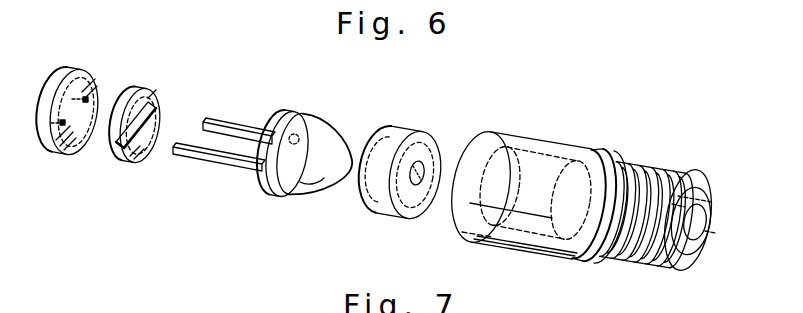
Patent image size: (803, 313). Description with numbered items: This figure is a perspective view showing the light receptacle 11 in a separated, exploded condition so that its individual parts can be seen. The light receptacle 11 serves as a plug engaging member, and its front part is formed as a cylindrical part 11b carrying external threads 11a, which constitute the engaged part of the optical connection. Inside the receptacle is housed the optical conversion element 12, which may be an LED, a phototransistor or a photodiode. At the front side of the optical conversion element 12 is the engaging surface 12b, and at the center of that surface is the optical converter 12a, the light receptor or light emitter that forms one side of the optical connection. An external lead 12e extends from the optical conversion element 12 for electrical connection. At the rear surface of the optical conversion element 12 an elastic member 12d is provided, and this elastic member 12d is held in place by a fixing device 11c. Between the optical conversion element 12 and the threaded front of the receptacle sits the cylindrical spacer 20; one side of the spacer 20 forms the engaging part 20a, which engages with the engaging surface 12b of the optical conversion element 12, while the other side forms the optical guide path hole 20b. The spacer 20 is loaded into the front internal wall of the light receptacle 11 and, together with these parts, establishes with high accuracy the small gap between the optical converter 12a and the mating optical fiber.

The light receptacle 11 is at (581, 202).
The external threads 11a is at (655, 168).
The cylindrical part 11b is at (697, 260).
The fixing device 11c is at (69, 67).
The optical conversion element 12 is at (266, 155).
The optical converter 12a is at (352, 172).
The engaging surface 12b is at (298, 199).
The elastic member 12d is at (150, 88).
The external lead 12e is at (210, 160).
The cylindrical spacer 20 is at (411, 172).
The engaging part 20a is at (367, 138).
The optical guide path hole 20b is at (421, 190).